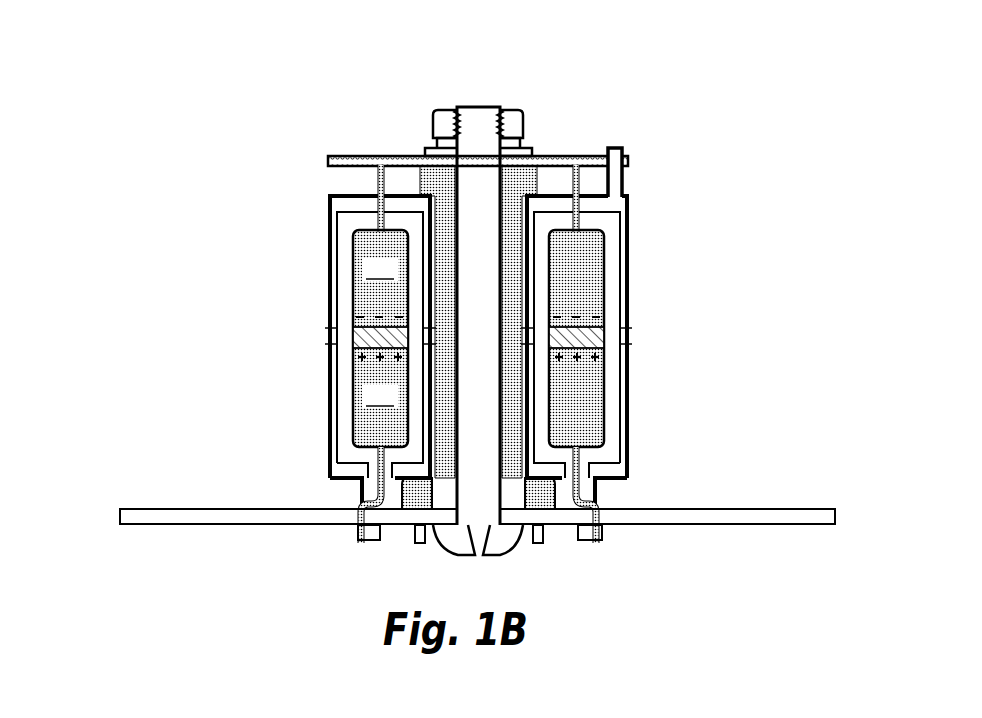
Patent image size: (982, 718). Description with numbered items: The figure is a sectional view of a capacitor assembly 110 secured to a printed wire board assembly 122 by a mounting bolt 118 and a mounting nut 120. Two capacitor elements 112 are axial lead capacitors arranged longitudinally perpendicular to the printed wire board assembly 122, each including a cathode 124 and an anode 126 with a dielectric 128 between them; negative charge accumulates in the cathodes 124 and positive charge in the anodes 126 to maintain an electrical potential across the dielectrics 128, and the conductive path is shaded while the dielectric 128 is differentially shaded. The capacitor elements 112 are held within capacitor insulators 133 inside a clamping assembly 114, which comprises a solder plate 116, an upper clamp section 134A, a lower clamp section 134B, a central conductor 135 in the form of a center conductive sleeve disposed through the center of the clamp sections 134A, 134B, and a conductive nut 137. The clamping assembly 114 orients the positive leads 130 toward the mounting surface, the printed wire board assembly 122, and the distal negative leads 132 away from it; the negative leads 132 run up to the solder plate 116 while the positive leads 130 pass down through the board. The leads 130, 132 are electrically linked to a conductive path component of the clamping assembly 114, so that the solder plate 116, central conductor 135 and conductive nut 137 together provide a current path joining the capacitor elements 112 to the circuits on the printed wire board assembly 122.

The capacitor assembly 110 is at (674, 126).
The capacitor element 112 is at (612, 305).
The clamping assembly 114 is at (647, 188).
The solder plate 116 is at (412, 145).
The mounting bolt 118 is at (468, 108).
The mounting nut 120 is at (442, 123).
The printed wire board assembly 122 is at (155, 500).
The cathode 124 is at (380, 338).
The anode 126 is at (380, 380).
The dielectric 128 is at (365, 332).
The positive lead 130 is at (360, 543).
The negative lead 132 is at (383, 155).
The capacitor insulator 133 is at (347, 225).
The upper clamp section 134A is at (313, 186).
The lower clamp section 134B is at (652, 471).
The central conductor 135 is at (527, 182).
The conductive nut 137 is at (537, 497).